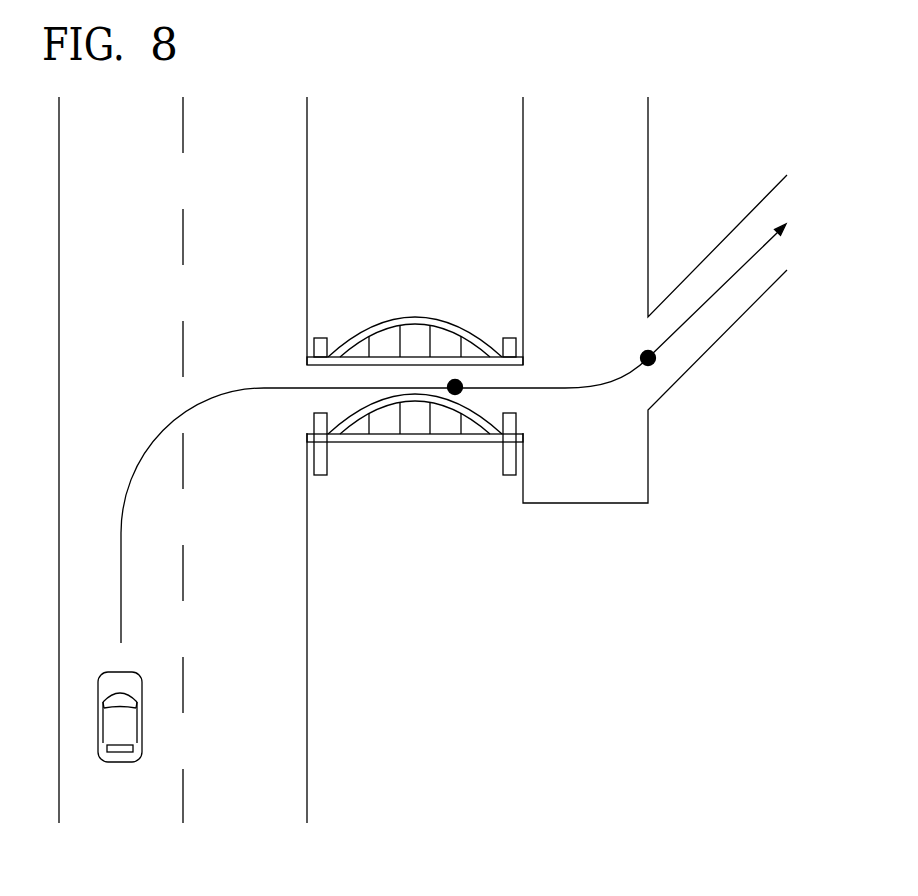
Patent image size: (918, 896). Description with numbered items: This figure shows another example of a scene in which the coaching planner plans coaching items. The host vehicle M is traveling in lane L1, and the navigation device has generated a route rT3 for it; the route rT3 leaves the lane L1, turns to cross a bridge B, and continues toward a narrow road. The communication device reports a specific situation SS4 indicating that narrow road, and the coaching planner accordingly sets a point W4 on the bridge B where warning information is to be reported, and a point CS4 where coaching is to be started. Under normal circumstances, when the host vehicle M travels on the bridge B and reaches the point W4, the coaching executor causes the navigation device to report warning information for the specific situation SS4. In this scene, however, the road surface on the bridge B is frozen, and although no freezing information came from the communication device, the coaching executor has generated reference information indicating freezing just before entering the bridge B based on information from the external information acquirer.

The bridge B is at (413, 315).
The point where warning information is reported W4 is at (454, 395).
The point where coaching is started CS4 is at (653, 363).
The specific situation SS4 is at (728, 317).
The route rT3 is at (121, 610).
The host vehicle M is at (142, 713).
The lane L1 is at (135, 824).